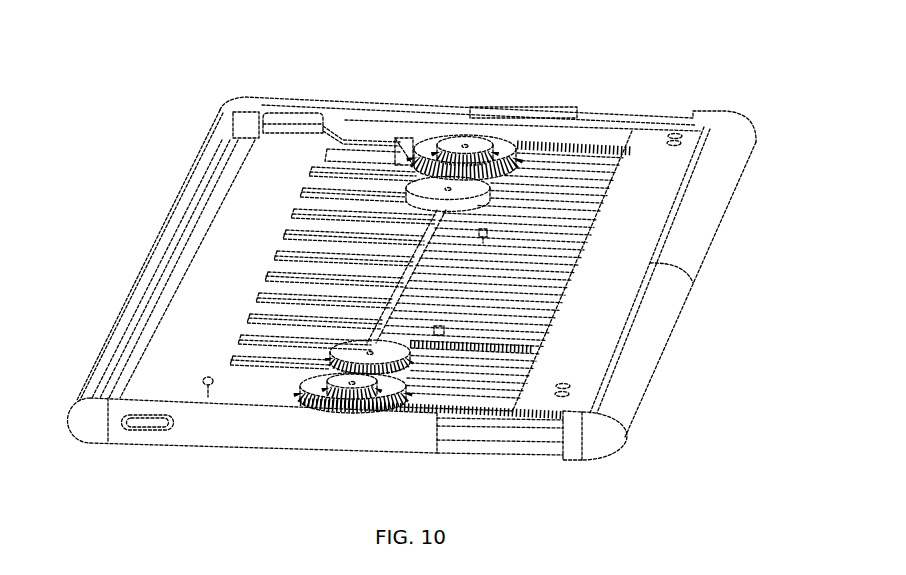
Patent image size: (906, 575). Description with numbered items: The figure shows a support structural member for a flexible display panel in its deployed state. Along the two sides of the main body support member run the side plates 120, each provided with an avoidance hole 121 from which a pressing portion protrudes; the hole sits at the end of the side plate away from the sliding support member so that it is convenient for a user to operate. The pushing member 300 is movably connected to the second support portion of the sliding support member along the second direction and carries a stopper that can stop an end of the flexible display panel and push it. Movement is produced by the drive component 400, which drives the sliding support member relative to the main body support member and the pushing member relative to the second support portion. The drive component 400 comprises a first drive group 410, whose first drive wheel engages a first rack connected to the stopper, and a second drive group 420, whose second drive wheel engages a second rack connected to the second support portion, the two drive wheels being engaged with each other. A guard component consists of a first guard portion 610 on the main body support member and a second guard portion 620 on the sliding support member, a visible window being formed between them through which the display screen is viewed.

The side plate 120 is at (348, 451).
The avoidance hole 121 is at (148, 421).
The pushing member 300 is at (648, 133).
The drive component 400 is at (408, 212).
The first drive group 410 is at (507, 50).
The second drive group 420 is at (457, 130).
The first guard portion 610 is at (177, 205).
The second guard portion 620 is at (645, 350).